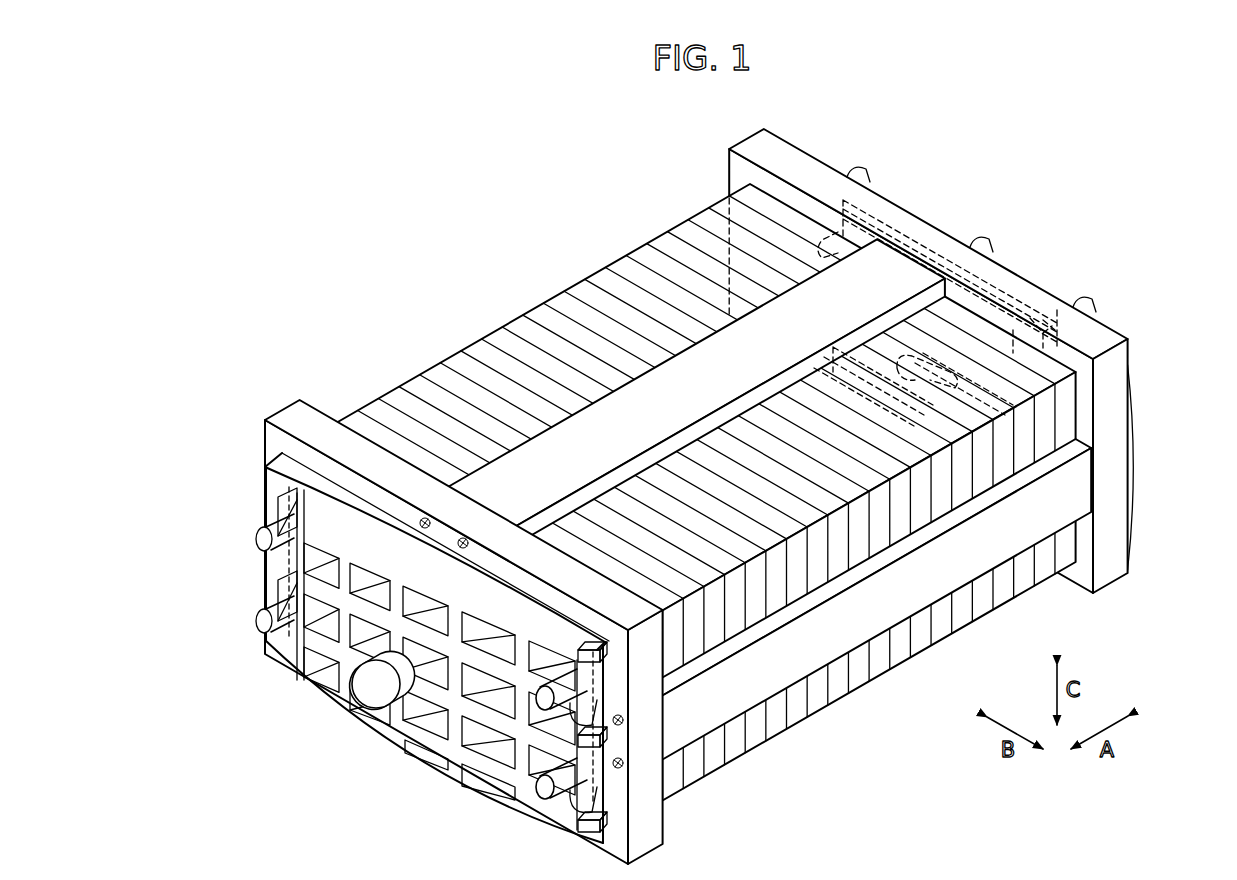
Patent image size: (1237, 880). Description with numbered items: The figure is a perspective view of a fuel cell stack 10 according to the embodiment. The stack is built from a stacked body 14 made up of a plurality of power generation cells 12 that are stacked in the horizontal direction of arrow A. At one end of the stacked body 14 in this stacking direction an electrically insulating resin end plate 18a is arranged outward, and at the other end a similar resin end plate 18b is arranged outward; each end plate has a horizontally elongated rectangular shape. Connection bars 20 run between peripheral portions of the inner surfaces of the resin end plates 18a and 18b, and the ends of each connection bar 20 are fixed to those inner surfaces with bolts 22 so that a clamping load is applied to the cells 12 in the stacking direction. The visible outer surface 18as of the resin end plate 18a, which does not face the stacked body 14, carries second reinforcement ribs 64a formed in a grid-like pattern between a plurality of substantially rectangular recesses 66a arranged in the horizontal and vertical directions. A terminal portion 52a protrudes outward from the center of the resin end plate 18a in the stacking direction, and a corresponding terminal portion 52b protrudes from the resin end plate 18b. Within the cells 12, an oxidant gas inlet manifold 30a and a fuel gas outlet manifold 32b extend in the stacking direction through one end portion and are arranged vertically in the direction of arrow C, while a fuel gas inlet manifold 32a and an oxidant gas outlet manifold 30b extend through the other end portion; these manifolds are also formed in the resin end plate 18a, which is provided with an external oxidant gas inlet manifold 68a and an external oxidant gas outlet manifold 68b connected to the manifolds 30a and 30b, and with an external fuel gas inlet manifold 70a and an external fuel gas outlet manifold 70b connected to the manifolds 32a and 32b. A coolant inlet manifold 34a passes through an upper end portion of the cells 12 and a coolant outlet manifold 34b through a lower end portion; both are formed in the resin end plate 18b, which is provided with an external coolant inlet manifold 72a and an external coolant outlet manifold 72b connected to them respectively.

The fuel cell stack 10 is at (605, 98).
The power generation cell 12 is at (783, 734).
The stacked body 14 is at (898, 769).
The resin end plate 18a is at (286, 408).
The outer surface of resin end plate 18as is at (648, 841).
The resin end plate 18b is at (726, 151).
The connection bar 20 is at (893, 252).
The bolt 22 is at (421, 527).
The oxidant gas inlet manifold 30a is at (258, 518).
The oxidant gas outlet manifold 30b is at (592, 790).
The fuel gas inlet manifold 32a is at (616, 672).
The fuel gas outlet manifold 32b is at (258, 608).
The coolant inlet manifold 34a is at (829, 228).
The coolant outlet manifold 34b is at (795, 395).
The terminal portion 52a is at (372, 687).
The terminal portion 52b is at (947, 322).
The second reinforcement rib 64a is at (515, 699).
The recess 66a is at (328, 684).
The external oxidant gas inlet manifold 68a is at (280, 518).
The external oxidant gas outlet manifold 68b is at (582, 806).
The external fuel gas inlet manifold 70a is at (578, 670).
The external fuel gas outlet manifold 70b is at (282, 603).
The external coolant inlet manifold 72a is at (1037, 320).
The external coolant outlet manifold 72b is at (867, 340).